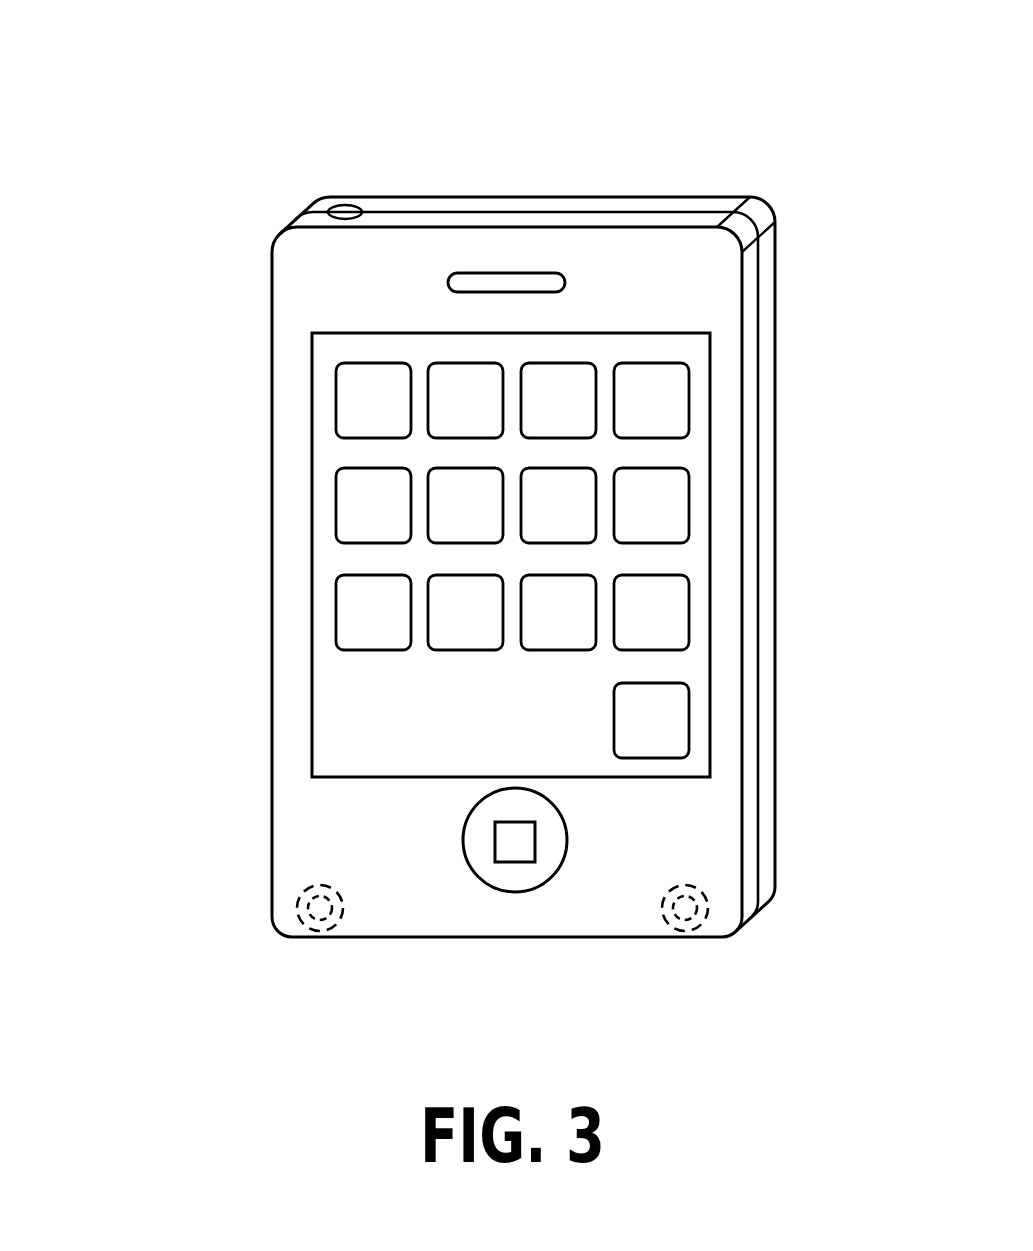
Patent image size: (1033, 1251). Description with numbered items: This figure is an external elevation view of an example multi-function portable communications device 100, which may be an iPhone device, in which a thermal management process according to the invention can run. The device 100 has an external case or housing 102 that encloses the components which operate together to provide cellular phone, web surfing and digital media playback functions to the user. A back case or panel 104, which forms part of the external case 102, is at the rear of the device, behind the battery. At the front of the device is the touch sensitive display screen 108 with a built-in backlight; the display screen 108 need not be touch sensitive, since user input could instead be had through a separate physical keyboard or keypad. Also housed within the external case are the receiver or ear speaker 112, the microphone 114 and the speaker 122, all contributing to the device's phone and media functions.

The multi-function portable communications device 100 is at (223, 118).
The external case or housing 102 is at (775, 380).
The back case or panel 104 is at (775, 803).
The touch sensitive display screen 108 is at (687, 668).
The receiver (ear speaker) 112 is at (521, 283).
The microphone 114 is at (302, 920).
The speaker 122 is at (706, 915).